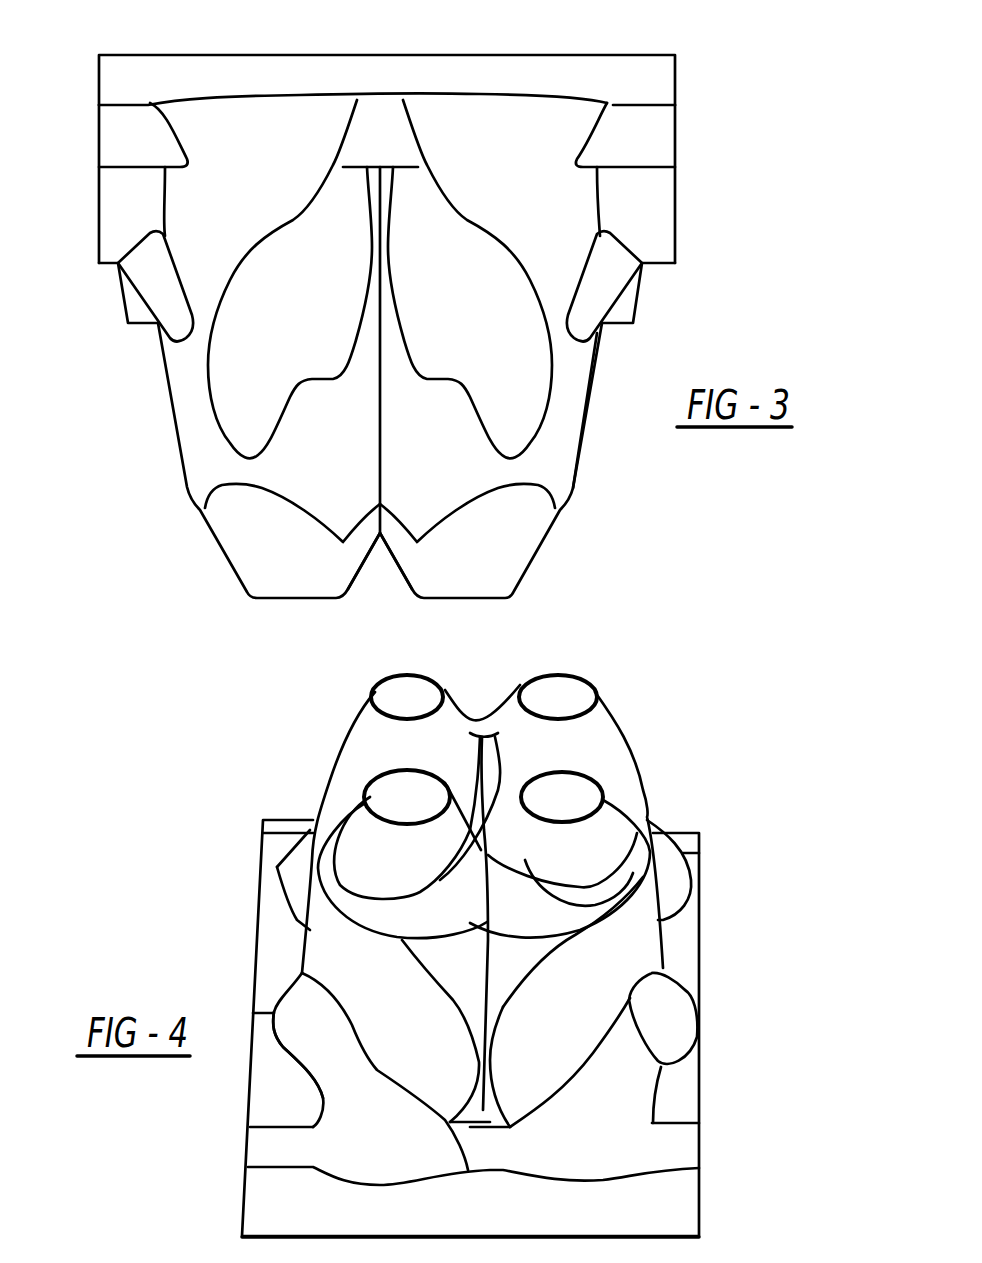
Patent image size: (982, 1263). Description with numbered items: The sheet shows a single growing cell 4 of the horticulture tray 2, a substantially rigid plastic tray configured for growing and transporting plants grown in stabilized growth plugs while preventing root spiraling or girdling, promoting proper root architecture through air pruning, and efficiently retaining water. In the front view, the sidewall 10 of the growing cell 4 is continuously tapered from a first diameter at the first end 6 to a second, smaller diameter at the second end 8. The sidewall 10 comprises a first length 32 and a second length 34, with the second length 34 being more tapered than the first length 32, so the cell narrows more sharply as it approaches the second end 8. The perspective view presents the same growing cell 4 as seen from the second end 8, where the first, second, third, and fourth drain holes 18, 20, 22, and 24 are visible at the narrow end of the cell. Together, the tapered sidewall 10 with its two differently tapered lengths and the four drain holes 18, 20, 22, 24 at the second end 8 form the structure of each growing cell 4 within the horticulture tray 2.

In FIG. 3, the horticulture tray 2 is at (84, 115).
In FIG. 4, the horticulture tray 2 is at (731, 1036).
In FIG. 3, the growing cell 4 is at (527, 140).
In FIG. 3, the first end 6 is at (597, 54).
In FIG. 3, the second end 8 is at (370, 607).
In FIG. 4, the second end 8 is at (487, 690).
In FIG. 3, the sidewall 10 is at (547, 267).
In FIG. 4, the sidewall 10 is at (385, 993).
In FIG. 4, the first drain hole 18 is at (397, 690).
In FIG. 4, the second drain hole 20 is at (397, 795).
In FIG. 4, the third drain hole 22 is at (557, 797).
In FIG. 4, the fourth drain hole 24 is at (557, 697).
In FIG. 3, the first length 32 is at (597, 370).
In FIG. 3, the second length 34 is at (577, 490).